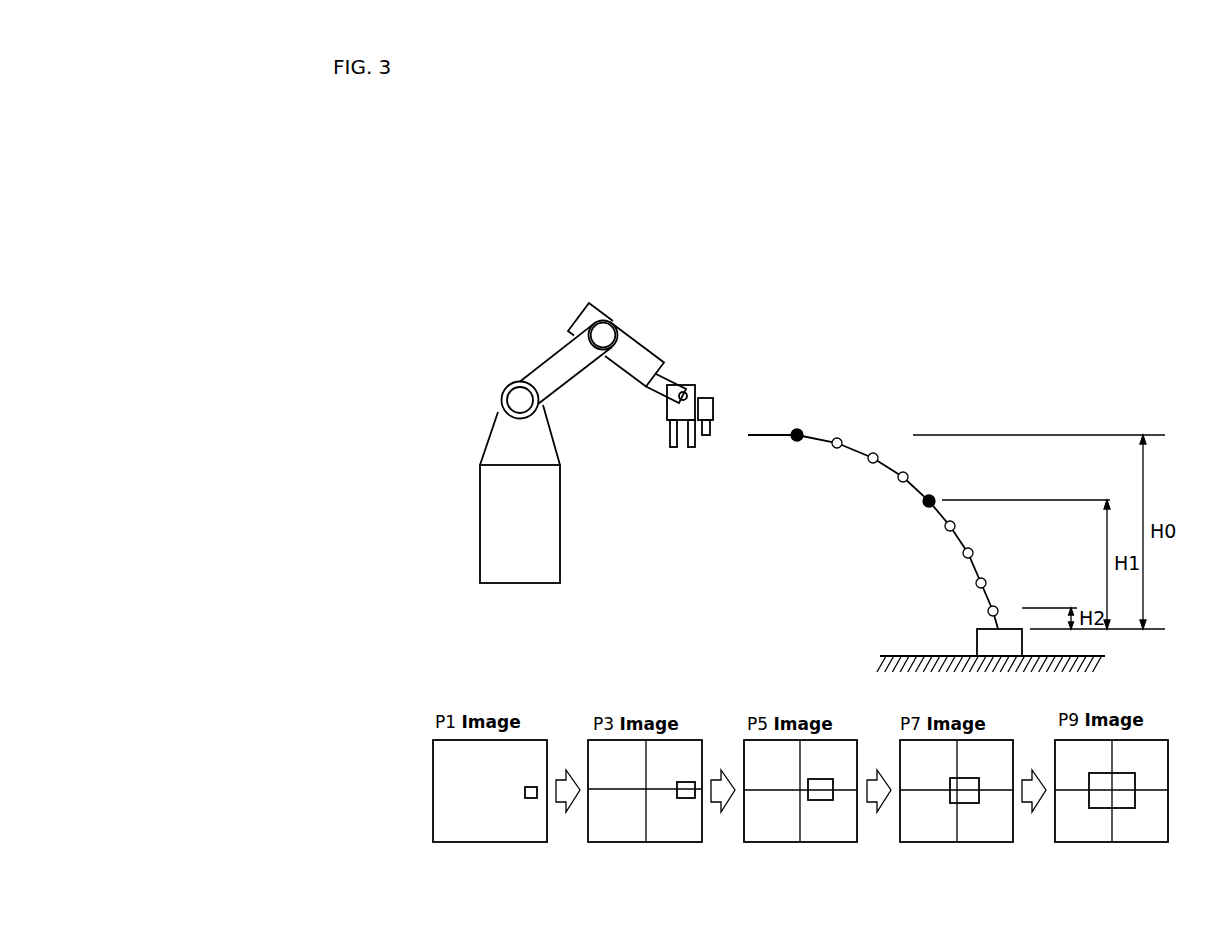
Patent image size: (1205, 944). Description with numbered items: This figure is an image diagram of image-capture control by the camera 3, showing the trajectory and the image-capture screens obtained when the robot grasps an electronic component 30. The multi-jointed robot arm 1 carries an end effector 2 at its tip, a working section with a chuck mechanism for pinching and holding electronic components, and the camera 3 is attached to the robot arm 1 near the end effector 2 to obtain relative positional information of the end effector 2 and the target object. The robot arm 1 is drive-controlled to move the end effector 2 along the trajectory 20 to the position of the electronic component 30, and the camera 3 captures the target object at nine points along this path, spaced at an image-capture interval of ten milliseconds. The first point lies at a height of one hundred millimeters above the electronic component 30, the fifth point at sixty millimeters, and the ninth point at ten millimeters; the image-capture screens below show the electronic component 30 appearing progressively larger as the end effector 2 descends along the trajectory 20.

The robot arm 1 is at (502, 432).
The end effector 2 is at (670, 412).
The camera 3 is at (708, 397).
The trajectory 20 is at (777, 437).
The electronic component 30 is at (987, 642).